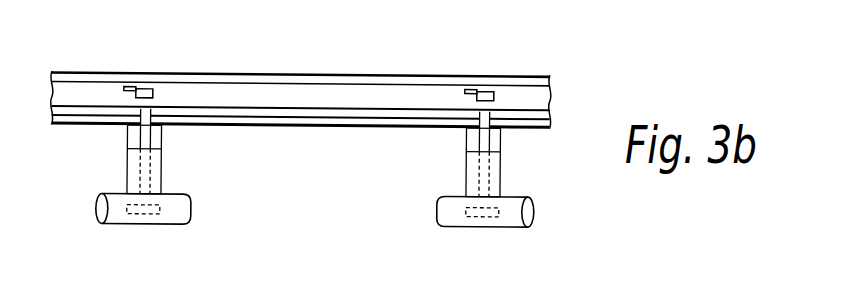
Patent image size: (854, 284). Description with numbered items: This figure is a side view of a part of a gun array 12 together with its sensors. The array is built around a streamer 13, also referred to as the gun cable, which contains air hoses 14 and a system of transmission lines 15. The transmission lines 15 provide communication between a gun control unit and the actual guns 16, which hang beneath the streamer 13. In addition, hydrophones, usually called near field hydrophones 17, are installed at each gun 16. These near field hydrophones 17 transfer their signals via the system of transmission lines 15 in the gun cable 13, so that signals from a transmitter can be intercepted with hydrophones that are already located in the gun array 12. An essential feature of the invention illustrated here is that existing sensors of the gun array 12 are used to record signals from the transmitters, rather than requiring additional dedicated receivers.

The gun array 12 is at (106, 46).
The streamer 13 is at (368, 75).
The air hoses 14 is at (345, 127).
The system of transmission lines 15 is at (268, 82).
The gun 16 is at (181, 194).
The near field hydrophone 17 is at (481, 89).